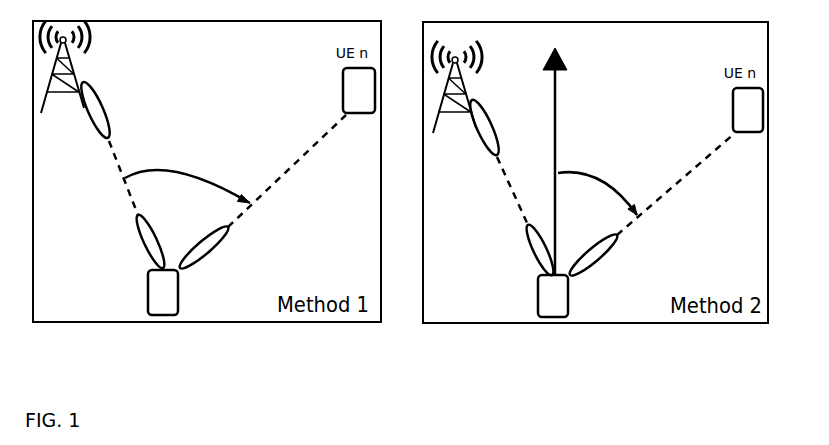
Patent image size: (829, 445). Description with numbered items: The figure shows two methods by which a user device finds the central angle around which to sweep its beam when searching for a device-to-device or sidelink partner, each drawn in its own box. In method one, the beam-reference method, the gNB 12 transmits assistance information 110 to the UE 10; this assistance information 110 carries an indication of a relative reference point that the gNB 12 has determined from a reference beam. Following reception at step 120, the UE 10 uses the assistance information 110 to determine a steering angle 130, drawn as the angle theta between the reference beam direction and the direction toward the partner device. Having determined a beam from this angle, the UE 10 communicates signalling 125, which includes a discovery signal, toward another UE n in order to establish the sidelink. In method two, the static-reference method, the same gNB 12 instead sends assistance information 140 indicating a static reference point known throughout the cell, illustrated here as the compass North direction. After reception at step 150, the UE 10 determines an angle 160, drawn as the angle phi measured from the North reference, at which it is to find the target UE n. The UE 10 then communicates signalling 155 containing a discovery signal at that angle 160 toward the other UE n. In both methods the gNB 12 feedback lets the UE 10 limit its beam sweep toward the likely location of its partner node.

The gNB 12 is at (289, 77).
The UE 10 is at (383, 293).
The assistance information 110 is at (109, 110).
The step 120 is at (158, 241).
The signalling 125 is at (218, 247).
The steering angle 130 is at (187, 176).
The assistance information 140 is at (499, 127).
The step 150 is at (524, 250).
The signalling 155 is at (603, 255).
The angle 160 is at (590, 150).